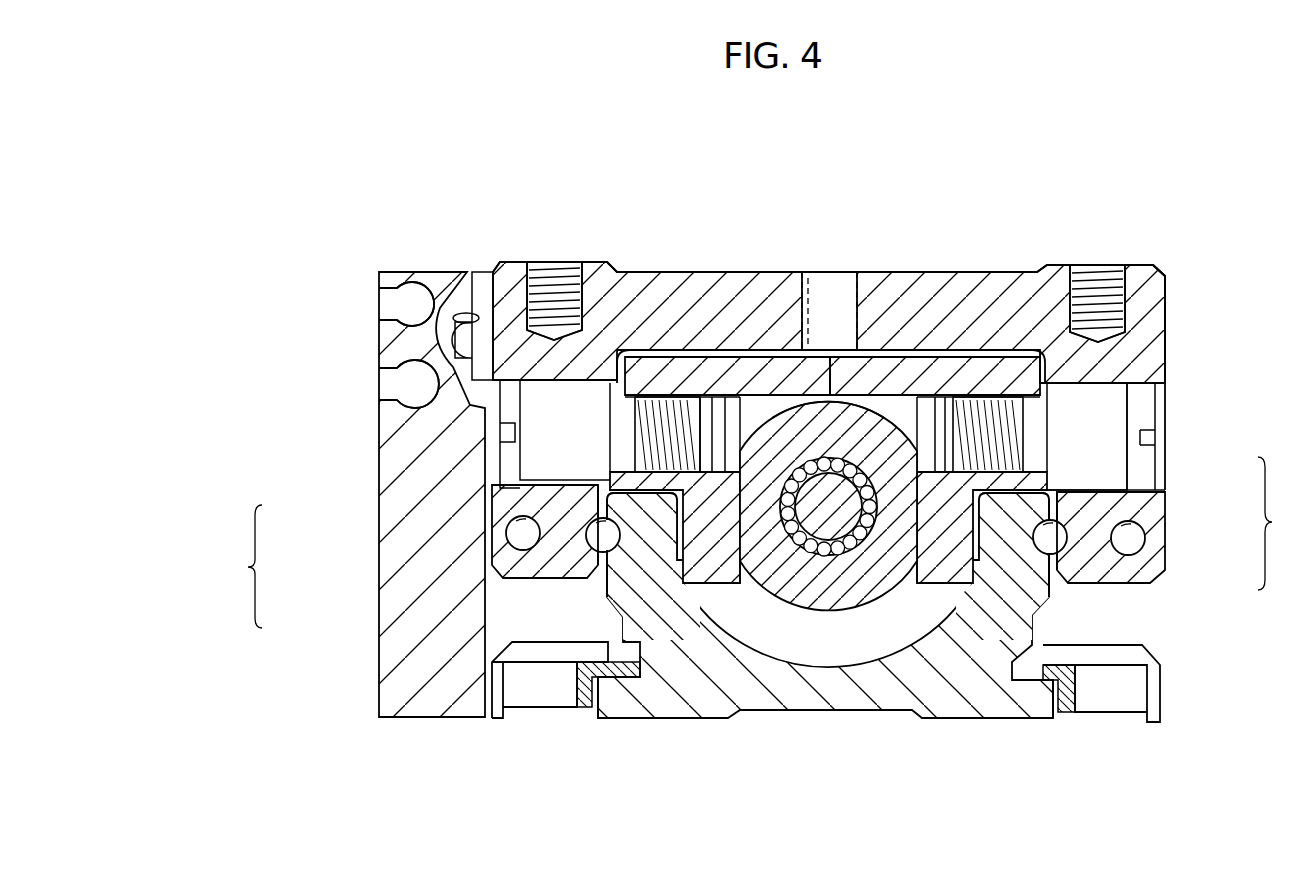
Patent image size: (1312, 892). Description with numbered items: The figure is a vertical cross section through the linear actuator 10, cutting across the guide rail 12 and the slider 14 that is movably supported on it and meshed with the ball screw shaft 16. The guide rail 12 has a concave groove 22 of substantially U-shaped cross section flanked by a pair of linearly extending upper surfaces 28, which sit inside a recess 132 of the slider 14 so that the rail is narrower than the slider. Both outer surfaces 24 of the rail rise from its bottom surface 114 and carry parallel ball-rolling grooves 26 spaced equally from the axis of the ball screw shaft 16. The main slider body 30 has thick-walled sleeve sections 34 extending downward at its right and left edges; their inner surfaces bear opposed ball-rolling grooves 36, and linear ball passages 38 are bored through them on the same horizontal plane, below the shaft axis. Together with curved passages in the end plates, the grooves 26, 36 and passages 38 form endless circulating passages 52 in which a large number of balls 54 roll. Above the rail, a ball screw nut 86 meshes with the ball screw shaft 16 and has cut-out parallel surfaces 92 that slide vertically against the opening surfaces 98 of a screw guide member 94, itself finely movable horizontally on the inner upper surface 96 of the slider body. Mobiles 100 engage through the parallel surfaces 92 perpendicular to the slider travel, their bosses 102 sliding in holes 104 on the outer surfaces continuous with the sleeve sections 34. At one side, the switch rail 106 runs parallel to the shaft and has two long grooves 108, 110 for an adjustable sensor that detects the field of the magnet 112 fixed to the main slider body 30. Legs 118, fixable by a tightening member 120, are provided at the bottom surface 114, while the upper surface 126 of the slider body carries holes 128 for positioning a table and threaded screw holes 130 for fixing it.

The linear actuator 10 is at (1022, 128).
The guide rail 12 is at (773, 716).
The slider 14 is at (1170, 356).
The ball screw shaft 16 is at (793, 712).
The concave groove 22 is at (838, 650).
The outer surfaces 24 is at (585, 690).
The ball-rolling grooves 26 is at (620, 555).
The upper surfaces 28 is at (598, 490).
The main slider body 30 is at (1165, 313).
The sleeve sections 34 is at (573, 578).
The ball-rolling grooves 36 is at (590, 545).
The ball passages 38 is at (506, 533).
The endless circulating passages 52 is at (762, 542).
The balls 54 is at (586, 538).
The ball screw nut 86 is at (812, 550).
The parallel surfaces 92 is at (715, 608).
The screw guide member 94 is at (712, 385).
The inner upper surface 96 is at (940, 385).
The opening surfaces 98 is at (782, 455).
The mobiles 100 is at (655, 400).
The bosses 102 is at (490, 412).
The holes 104 is at (1072, 395).
The switch rail 106 is at (393, 272).
The long groove 108 is at (378, 288).
The long groove 110 is at (395, 388).
The magnet 112 is at (455, 322).
The bottom surface 114 is at (970, 718).
The legs 118 is at (625, 700).
The tightening member 120 is at (493, 690).
The upper surface 126 is at (527, 275).
The holes 128 is at (830, 295).
The threaded screw holes 130 is at (554, 278).
The recess 132 is at (622, 348).